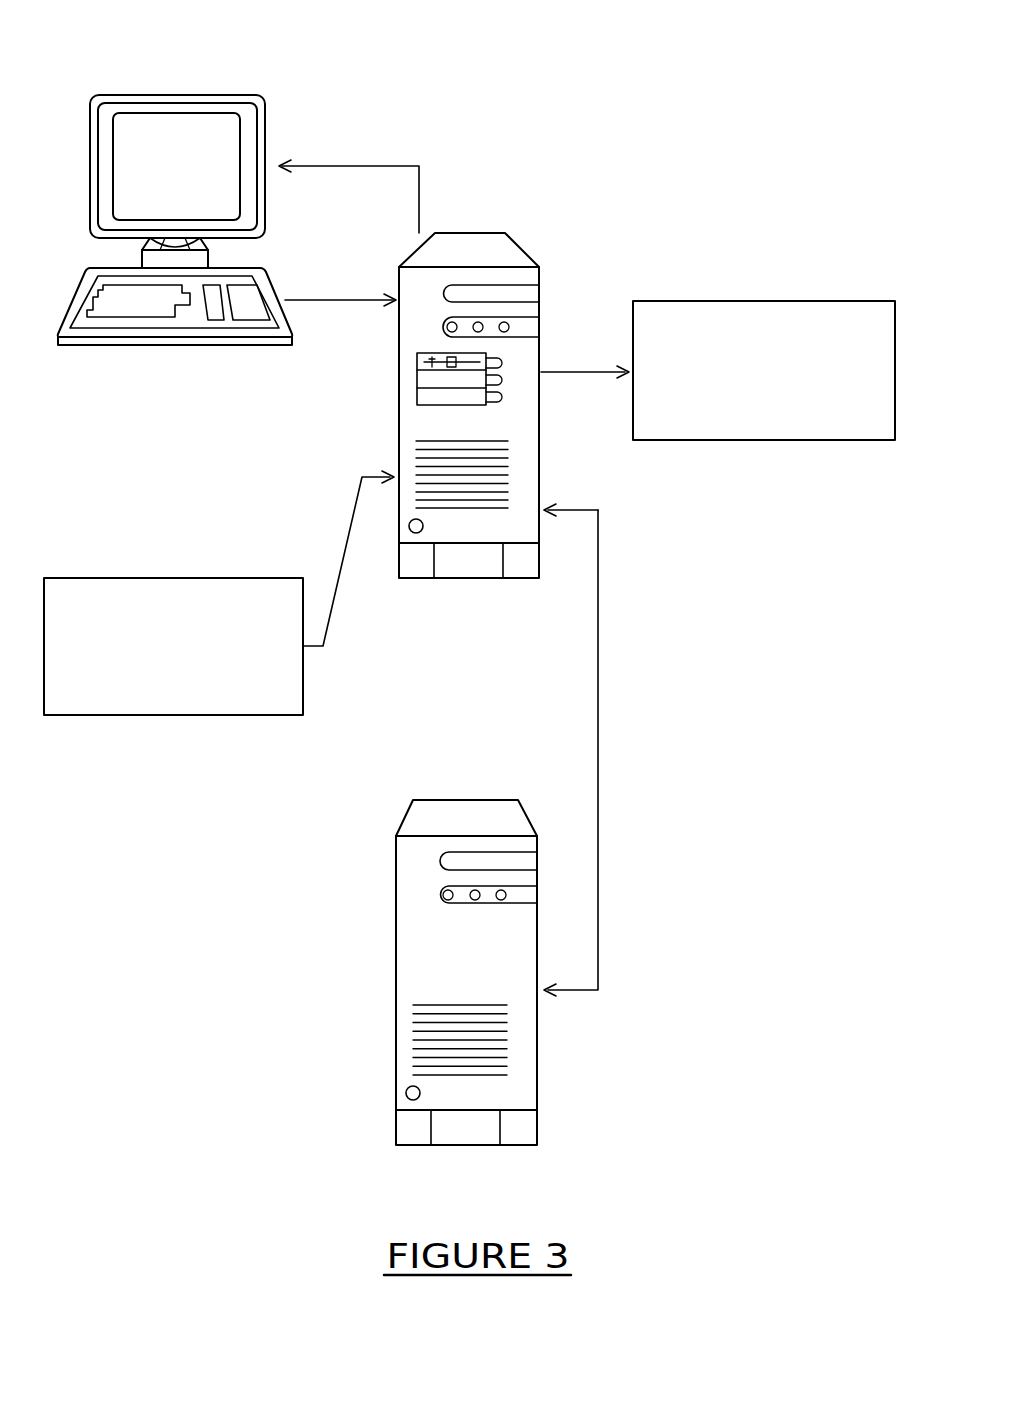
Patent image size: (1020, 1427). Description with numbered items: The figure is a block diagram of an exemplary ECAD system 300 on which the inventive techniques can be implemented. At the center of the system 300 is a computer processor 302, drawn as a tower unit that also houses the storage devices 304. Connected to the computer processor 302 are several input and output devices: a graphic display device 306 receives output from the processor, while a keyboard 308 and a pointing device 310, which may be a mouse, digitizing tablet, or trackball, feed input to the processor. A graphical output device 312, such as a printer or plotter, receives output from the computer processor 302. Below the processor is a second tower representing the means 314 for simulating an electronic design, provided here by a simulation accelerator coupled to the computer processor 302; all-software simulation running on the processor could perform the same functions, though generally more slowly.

The ECAD system 300 is at (761, 27).
The computer processor 302 is at (431, 419).
The storage devices 304 is at (381, 355).
The graphic display device 306 is at (265, 128).
The keyboard 308 is at (268, 280).
The pointing device 310 is at (226, 578).
The graphical output device 312 is at (731, 300).
The means for simulating an electronic design 314 is at (450, 800).